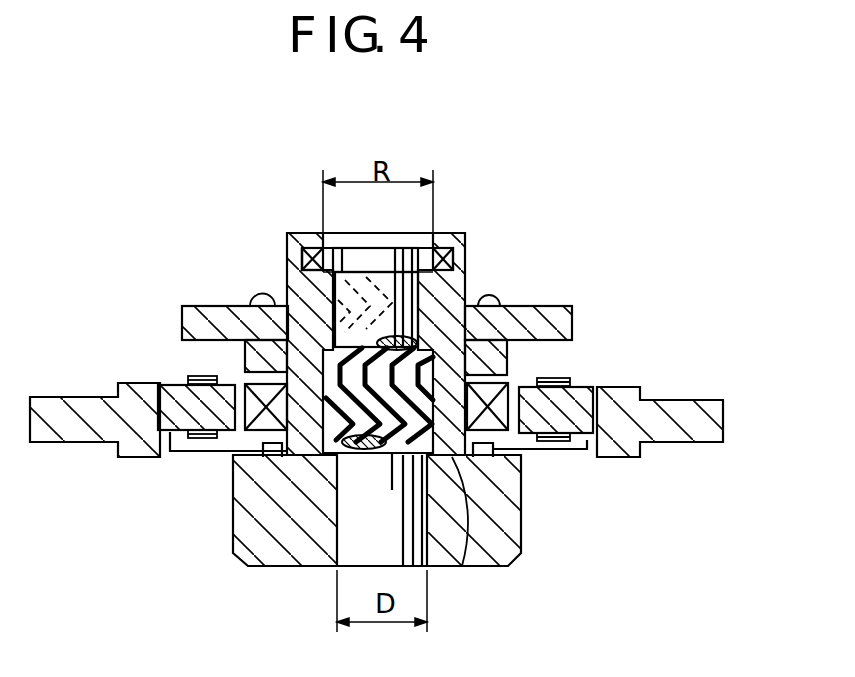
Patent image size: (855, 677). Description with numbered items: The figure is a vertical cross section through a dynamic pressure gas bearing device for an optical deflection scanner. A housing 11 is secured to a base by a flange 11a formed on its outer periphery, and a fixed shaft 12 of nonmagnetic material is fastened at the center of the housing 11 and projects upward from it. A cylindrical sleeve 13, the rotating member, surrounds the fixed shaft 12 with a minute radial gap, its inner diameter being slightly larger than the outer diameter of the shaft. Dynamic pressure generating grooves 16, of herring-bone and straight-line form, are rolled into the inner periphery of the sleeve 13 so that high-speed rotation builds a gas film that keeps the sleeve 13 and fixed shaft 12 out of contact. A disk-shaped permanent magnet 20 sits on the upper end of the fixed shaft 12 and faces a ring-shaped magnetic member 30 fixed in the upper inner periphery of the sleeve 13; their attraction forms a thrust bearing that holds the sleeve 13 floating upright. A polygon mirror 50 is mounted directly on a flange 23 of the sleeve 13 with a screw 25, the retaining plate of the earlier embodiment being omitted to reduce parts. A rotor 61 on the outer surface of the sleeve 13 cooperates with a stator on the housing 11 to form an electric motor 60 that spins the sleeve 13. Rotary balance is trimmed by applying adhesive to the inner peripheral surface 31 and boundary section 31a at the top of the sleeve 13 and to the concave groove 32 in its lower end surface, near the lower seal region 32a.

The housing 11 is at (257, 558).
The flange 11a is at (725, 428).
The fixed shaft 12 is at (466, 291).
The sleeve 13 is at (464, 256).
The dynamic pressure generating grooves 16 is at (512, 322).
The permanent magnet 20 is at (290, 273).
The flange 23 is at (508, 356).
The screw 25 is at (255, 299).
The magnetic member 30 is at (442, 247).
The inner peripheral surface 31 is at (317, 233).
The boundary section 31a is at (310, 252).
The concave groove 32 is at (463, 580).
The seal ring 32a is at (262, 468).
The polygon mirror 50 is at (573, 323).
The electric motor 60 is at (572, 380).
The rotor 61 is at (523, 450).